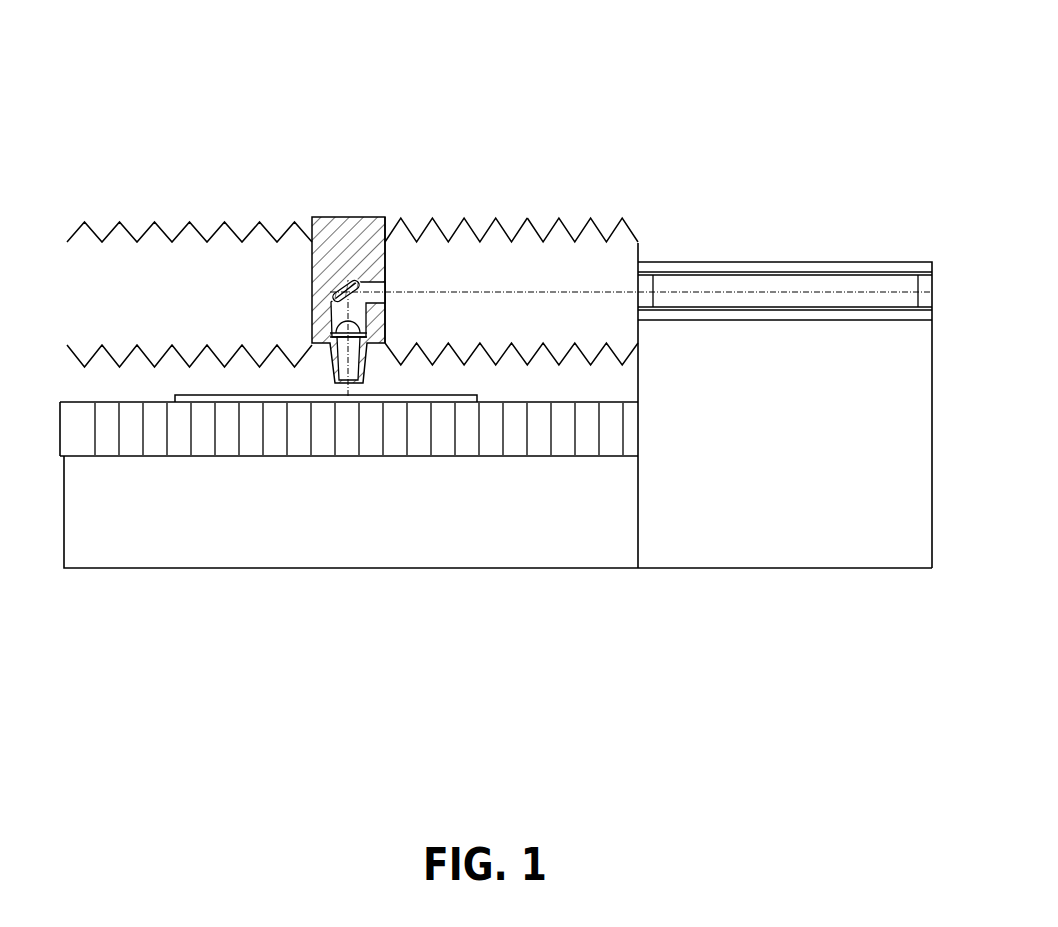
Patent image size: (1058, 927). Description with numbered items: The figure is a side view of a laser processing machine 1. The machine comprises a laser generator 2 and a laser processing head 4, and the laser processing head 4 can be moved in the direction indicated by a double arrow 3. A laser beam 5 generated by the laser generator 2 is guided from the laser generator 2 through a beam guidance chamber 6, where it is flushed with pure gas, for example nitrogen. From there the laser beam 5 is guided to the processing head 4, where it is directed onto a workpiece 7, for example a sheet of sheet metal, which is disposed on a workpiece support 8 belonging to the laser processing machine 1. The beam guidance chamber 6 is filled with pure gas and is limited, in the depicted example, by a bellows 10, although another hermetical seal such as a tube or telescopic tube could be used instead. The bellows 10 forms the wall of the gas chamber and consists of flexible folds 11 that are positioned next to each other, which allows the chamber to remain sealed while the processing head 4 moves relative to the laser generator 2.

The laser processing machine 1 is at (588, 100).
The laser generator 2 is at (803, 267).
The double arrow 3 is at (303, 195).
The laser processing head 4 is at (322, 311).
The laser beam 5 is at (436, 293).
The beam guidance chamber 6 is at (603, 272).
The workpiece 7 is at (402, 398).
The workpiece support 8 is at (538, 430).
The bellows 10 is at (567, 223).
The flexible folds 11 is at (498, 220).